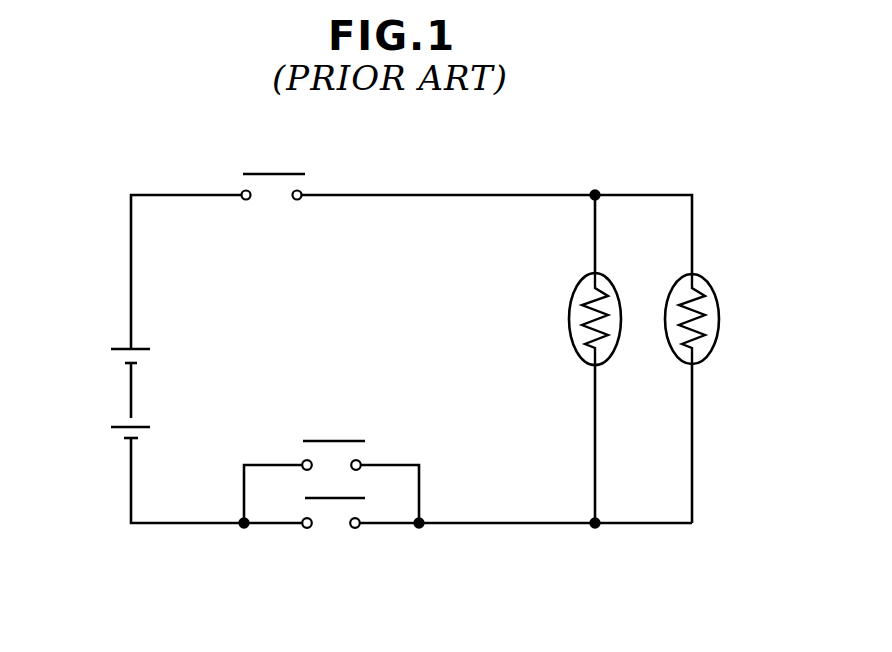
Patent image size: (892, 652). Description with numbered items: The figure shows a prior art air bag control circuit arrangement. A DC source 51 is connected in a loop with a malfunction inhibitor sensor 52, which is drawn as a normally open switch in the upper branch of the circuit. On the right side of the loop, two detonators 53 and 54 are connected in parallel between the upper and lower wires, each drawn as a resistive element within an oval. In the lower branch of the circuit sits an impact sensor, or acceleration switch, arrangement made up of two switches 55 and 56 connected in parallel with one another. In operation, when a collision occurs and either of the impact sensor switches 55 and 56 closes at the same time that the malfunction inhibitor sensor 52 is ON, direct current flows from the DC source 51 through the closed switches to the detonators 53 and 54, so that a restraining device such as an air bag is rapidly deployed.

The DC source 51 is at (125, 388).
The malfunction inhibitor sensor 52 is at (271, 169).
The detonator 53 is at (619, 343).
The detonator 54 is at (719, 333).
The impact sensor switch 55 is at (345, 436).
The impact sensor switch 56 is at (337, 522).